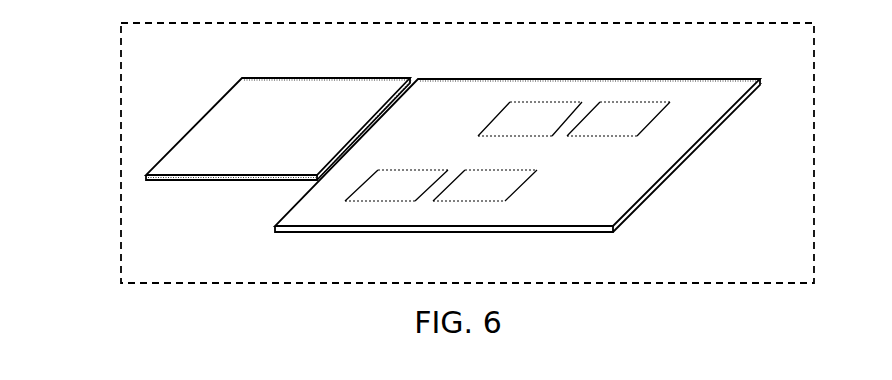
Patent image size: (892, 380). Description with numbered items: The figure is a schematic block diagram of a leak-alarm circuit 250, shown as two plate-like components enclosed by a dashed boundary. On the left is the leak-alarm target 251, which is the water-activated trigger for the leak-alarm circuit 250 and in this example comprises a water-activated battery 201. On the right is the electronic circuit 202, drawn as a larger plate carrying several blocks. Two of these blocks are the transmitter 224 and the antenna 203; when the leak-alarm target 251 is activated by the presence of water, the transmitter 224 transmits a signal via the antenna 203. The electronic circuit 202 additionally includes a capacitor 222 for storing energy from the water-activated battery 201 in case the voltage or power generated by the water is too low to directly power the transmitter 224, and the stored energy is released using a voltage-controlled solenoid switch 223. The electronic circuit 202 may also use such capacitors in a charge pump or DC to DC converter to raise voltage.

The leak-alarm circuit 250 is at (119, 65).
The leak-alarm target 251 is at (191, 182).
The water-activated battery 201 is at (298, 139).
The electronic circuit 202 is at (674, 136).
The antenna 203 is at (627, 111).
The transmitter 224 is at (531, 111).
The capacitor 222 is at (383, 193).
The voltage-controlled solenoid switch 223 is at (481, 193).